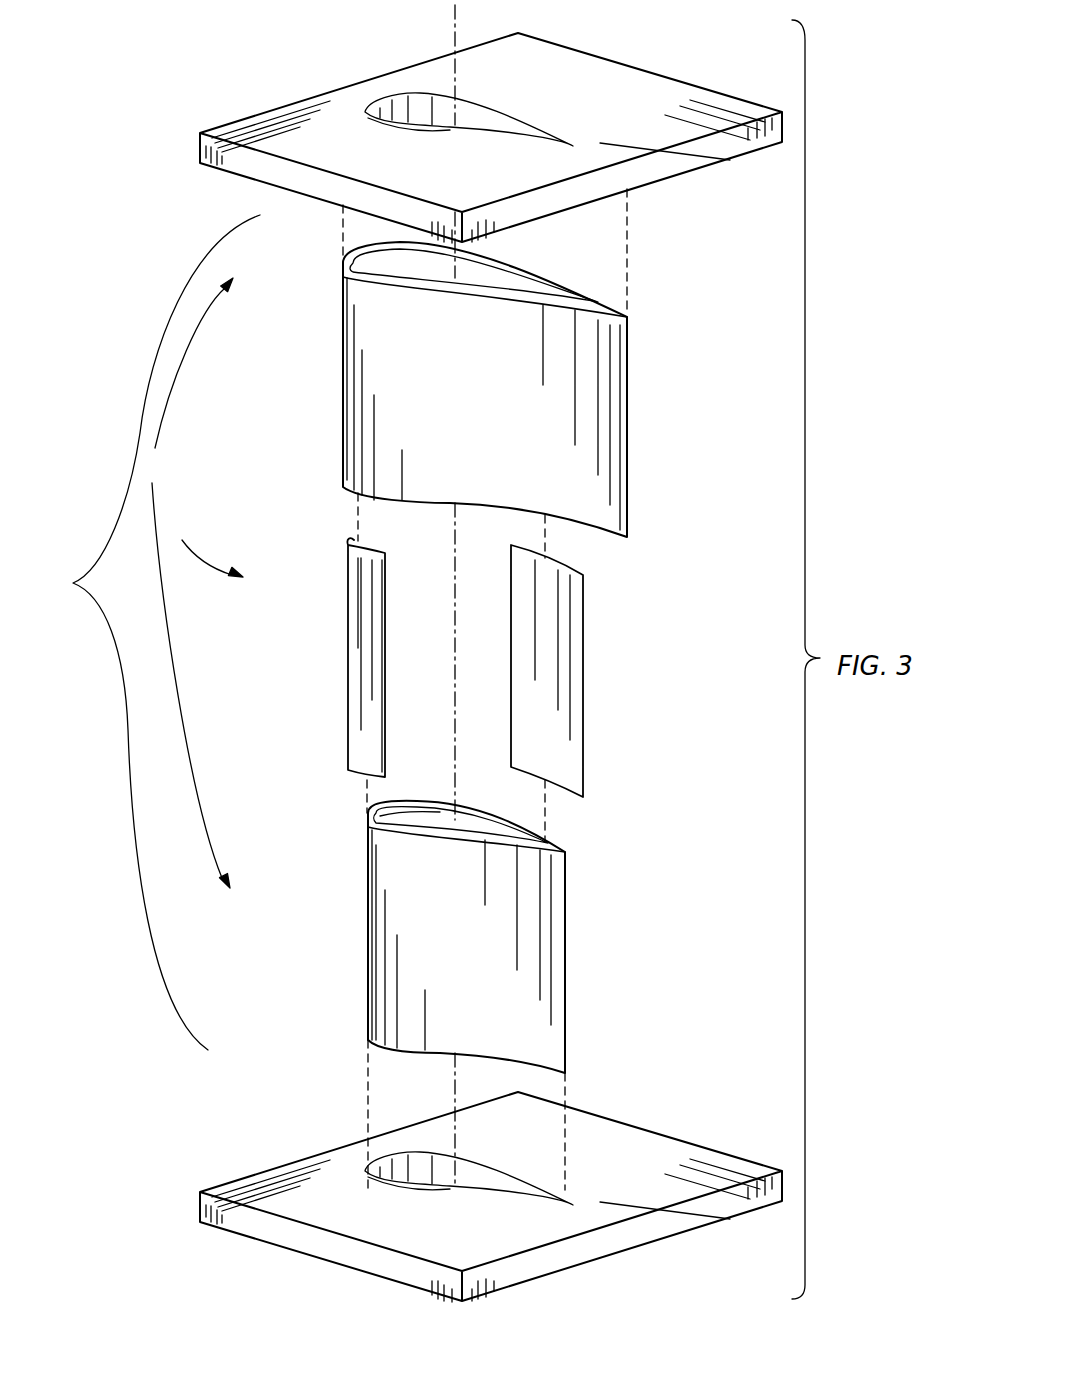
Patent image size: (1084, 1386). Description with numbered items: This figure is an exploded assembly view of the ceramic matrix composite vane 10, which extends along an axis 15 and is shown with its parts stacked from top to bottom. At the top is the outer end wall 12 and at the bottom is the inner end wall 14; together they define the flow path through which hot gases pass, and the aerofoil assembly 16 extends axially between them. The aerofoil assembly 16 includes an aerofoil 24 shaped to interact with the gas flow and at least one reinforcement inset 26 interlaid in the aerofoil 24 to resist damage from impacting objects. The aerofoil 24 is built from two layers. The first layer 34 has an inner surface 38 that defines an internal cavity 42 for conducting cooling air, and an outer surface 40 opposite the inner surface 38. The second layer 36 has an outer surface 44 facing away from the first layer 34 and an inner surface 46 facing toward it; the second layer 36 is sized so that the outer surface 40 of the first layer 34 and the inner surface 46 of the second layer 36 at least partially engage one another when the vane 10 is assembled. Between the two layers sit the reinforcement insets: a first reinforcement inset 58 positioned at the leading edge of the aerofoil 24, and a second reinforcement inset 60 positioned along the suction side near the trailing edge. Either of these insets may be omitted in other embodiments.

The vane 10 is at (166, 107).
The outer end wall 12 is at (291, 80).
The inner end wall 14 is at (214, 1147).
The axis 15 is at (457, 40).
The aerofoil assembly 16 is at (151, 632).
The aerofoil 24 is at (185, 583).
The reinforcement inset 26 is at (204, 545).
The first layer 34 is at (325, 950).
The second layer 36 is at (318, 321).
The inner surface 38 is at (435, 812).
The outer surface 40 is at (382, 982).
The internal cavity 42 is at (388, 810).
The outer surface 44 is at (358, 423).
The inner surface 46 is at (382, 262).
The first reinforcement inset 58 is at (328, 637).
The second reinforcement inset 60 is at (610, 647).